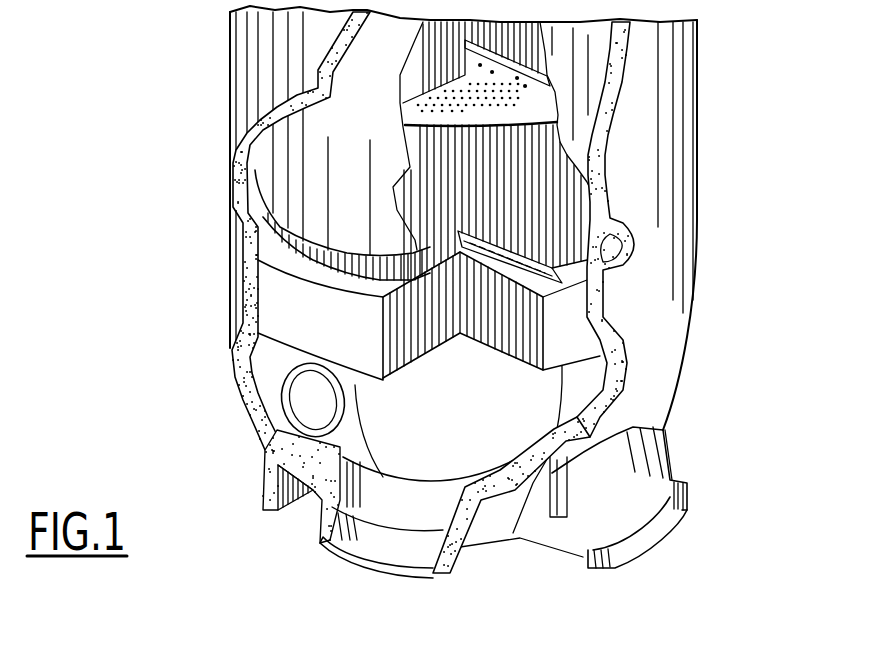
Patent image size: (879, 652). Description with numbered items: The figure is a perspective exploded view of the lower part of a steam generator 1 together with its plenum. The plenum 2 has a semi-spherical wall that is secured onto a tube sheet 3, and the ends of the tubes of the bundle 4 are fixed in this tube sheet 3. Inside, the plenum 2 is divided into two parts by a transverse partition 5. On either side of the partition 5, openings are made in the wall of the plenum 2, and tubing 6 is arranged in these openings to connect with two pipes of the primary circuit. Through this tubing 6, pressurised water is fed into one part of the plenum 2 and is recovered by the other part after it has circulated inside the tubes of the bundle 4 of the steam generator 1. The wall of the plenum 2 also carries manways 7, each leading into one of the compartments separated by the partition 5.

The steam generator 1 is at (717, 240).
The plenum 2 is at (235, 388).
The tube sheet 3 is at (320, 320).
The bundle 4 is at (548, 174).
The transverse partition 5 is at (471, 456).
The tubing 6 is at (317, 520).
The manway 7 is at (310, 403).